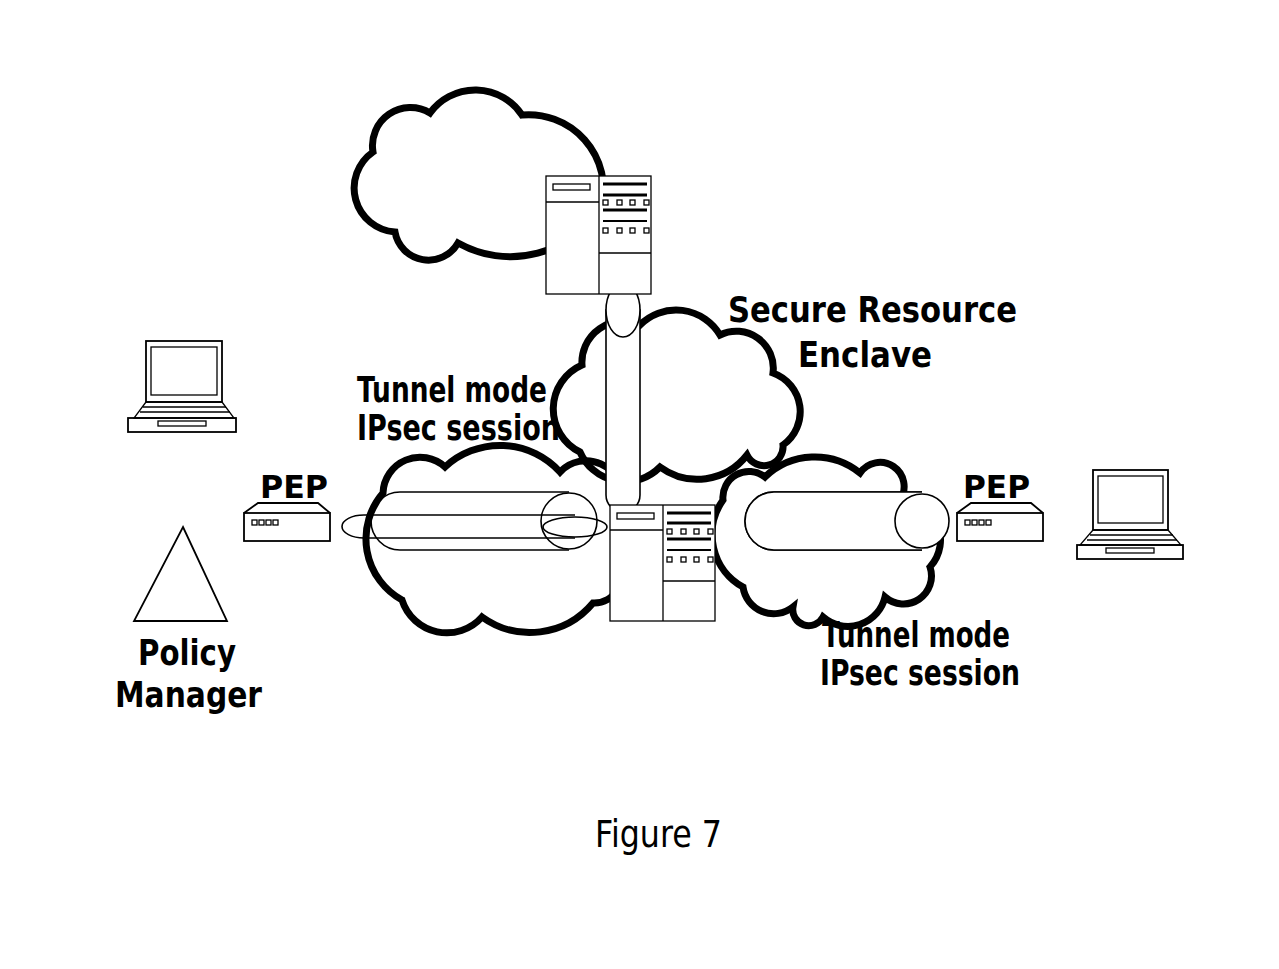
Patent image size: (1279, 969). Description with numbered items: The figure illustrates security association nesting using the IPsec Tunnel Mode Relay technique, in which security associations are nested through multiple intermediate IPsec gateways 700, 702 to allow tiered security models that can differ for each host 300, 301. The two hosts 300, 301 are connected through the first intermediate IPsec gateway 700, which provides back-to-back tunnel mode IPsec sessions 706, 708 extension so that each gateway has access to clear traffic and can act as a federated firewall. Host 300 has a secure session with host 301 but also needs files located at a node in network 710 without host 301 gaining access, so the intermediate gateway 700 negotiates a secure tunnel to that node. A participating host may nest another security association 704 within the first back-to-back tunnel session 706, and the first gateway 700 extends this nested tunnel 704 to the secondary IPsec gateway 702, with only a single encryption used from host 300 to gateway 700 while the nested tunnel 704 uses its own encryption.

The network 710 is at (472, 134).
The secondary IPsec gateway 702 is at (722, 221).
The first intermediate IPsec gateway 700 is at (711, 622).
The nested security association 704 is at (623, 377).
The back-to-back IPsec tunnel session 706 is at (540, 552).
The back-to-back IPsec tunnel session 708 is at (836, 505).
The IPv6 host 300 is at (222, 349).
The IPv6 host 301 is at (1157, 478).